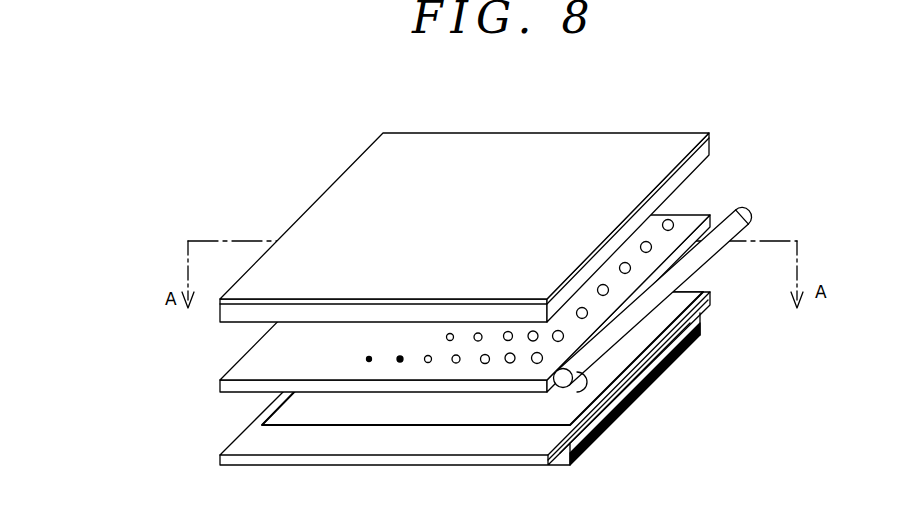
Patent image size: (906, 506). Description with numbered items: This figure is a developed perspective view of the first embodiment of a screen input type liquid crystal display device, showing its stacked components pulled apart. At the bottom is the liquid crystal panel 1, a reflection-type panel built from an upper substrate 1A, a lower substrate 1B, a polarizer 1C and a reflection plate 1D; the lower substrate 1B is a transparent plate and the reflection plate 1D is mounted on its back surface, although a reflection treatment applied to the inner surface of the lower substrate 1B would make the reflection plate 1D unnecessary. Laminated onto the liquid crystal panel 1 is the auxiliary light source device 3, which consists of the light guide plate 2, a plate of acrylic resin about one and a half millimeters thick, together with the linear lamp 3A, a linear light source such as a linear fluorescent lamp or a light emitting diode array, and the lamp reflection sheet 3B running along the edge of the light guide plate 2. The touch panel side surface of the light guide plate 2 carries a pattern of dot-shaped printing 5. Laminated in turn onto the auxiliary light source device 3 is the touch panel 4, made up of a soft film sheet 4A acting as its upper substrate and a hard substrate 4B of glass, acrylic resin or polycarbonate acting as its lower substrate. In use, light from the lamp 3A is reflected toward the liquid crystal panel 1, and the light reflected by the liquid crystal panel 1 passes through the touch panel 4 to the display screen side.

The liquid crystal panel 1 is at (499, 385).
The upper substrate 1A is at (712, 291).
The lower substrate 1B is at (703, 322).
The polarizer 1C is at (677, 347).
The reflection plate 1D is at (692, 336).
The light guide plate 2 is at (228, 368).
The auxiliary light source device 3 is at (481, 306).
The linear lamp 3A is at (717, 213).
The lamp reflection sheet 3B is at (755, 215).
The touch panel 4 is at (502, 184).
The soft film sheet 4A is at (713, 132).
The hard substrate 4B is at (713, 143).
The dot-shaped printing 5 is at (587, 315).